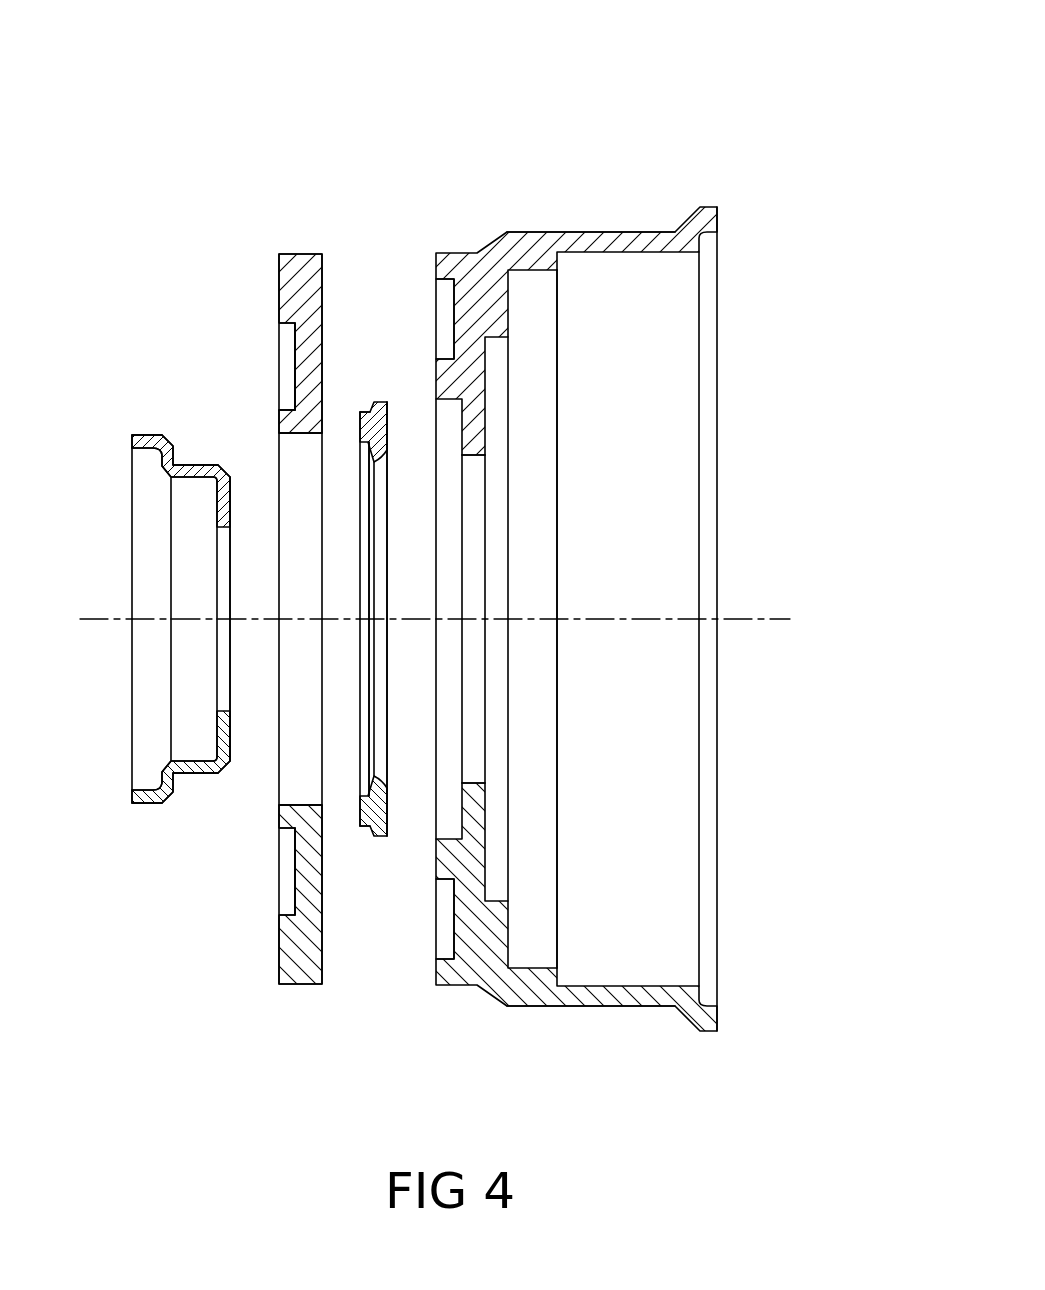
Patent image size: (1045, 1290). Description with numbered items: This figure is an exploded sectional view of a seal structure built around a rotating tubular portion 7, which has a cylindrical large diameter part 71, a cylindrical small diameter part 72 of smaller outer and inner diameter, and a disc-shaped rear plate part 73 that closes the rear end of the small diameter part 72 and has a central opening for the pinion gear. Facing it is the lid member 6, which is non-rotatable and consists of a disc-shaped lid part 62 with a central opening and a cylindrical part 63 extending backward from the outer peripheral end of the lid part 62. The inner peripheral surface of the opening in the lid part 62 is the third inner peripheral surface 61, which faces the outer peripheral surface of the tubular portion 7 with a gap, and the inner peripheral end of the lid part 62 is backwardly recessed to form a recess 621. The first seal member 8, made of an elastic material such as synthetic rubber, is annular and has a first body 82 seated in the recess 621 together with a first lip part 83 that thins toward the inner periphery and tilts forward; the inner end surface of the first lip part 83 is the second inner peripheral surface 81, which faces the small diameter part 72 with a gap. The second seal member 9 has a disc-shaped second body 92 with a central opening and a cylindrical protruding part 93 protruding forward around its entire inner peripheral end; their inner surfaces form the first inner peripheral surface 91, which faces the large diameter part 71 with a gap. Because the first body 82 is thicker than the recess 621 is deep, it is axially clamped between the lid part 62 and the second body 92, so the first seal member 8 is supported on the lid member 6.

The lid member 6 is at (495, 213).
The third inner peripheral surface 61 is at (473, 457).
The lid part 62 is at (436, 312).
The recess 621 is at (462, 812).
The cylindrical part 63 is at (540, 231).
The tubular portion 7 is at (170, 410).
The large diameter part 71 is at (143, 803).
The small diameter part 72 is at (200, 773).
The rear plate part 73 is at (229, 733).
The first seal member 8 is at (373, 373).
The second inner peripheral surface 81 is at (370, 786).
The first body 82 is at (360, 422).
The first lip part 83 is at (389, 457).
The second seal member 9 is at (298, 213).
The first inner peripheral surface 91 is at (297, 806).
The second body 92 is at (295, 367).
The protruding part 93 is at (278, 422).